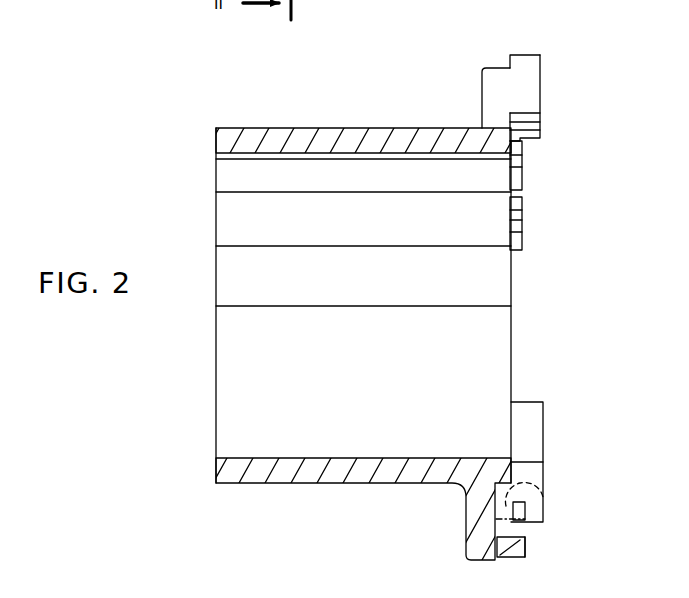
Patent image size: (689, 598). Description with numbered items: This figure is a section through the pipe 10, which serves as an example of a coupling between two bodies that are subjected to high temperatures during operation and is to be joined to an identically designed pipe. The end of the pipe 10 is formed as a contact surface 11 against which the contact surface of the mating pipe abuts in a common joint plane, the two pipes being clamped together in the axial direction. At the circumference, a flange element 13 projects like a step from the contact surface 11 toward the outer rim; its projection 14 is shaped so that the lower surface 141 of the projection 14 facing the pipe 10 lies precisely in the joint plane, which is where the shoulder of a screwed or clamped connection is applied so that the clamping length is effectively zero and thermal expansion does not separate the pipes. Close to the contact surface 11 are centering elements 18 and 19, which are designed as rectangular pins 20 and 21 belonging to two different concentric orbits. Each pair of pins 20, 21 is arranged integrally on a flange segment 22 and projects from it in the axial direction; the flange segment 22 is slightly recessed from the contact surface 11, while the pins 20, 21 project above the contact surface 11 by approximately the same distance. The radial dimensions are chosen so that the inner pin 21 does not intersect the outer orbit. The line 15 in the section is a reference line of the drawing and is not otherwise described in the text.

The pipe 10 is at (322, 143).
The contact surface 11 is at (513, 327).
The flange element 13 is at (488, 96).
The projection 14 is at (528, 87).
The lower surface 141 is at (506, 64).
The axis line 15 is at (525, 528).
The centering element 18 is at (522, 547).
The centering element 19 is at (528, 507).
The rectangular pin 20 is at (522, 170).
The rectangular pin 21 is at (520, 490).
The flange segment 22 is at (480, 504).